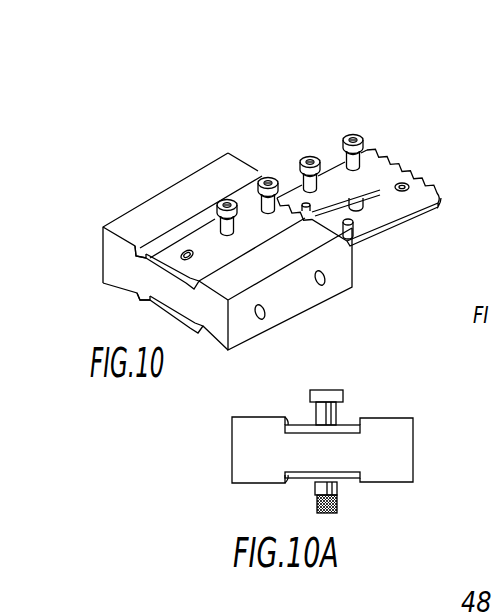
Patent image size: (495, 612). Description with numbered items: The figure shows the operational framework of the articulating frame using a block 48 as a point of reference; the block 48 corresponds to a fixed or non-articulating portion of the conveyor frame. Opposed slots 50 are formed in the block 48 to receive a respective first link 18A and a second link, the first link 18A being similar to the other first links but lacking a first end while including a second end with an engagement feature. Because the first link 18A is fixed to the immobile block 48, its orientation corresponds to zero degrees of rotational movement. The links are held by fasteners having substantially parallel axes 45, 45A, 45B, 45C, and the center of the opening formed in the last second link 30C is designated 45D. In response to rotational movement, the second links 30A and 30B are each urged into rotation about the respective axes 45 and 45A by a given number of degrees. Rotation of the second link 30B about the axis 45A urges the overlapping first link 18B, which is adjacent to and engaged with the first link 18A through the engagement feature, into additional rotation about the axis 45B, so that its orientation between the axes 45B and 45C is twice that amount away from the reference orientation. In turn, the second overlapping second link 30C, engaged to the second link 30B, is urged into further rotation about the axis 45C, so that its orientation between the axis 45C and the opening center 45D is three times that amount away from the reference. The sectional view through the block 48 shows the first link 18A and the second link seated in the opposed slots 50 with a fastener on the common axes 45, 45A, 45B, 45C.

In FIG. 10, the axis 45 is at (227, 198).
In FIG. 10A, the axis 45 is at (327, 388).
In FIG. 10, the axis 45A is at (268, 176).
In FIG. 10, the axis 45B is at (310, 155).
In FIG. 10, the axis 45C is at (357, 133).
In FIG. 10, the center of the opening formed in second link 45D is at (402, 182).
In FIG. 10, the block 48 is at (175, 184).
In FIG. 10A, the block 48 is at (232, 443).
In FIG. 10, the opposed slots 50 is at (141, 247).
In FIG. 10A, the opposed slots 50 is at (285, 420).
In FIG. 10A, the first link 18A is at (350, 425).
In FIG. 10A, the first link 18B is at (360, 407).
In FIG. 10A, the second link 30A is at (345, 478).
In FIG. 10A, the second link 30B is at (375, 495).
In FIG. 10A, the second link 30C is at (375, 495).